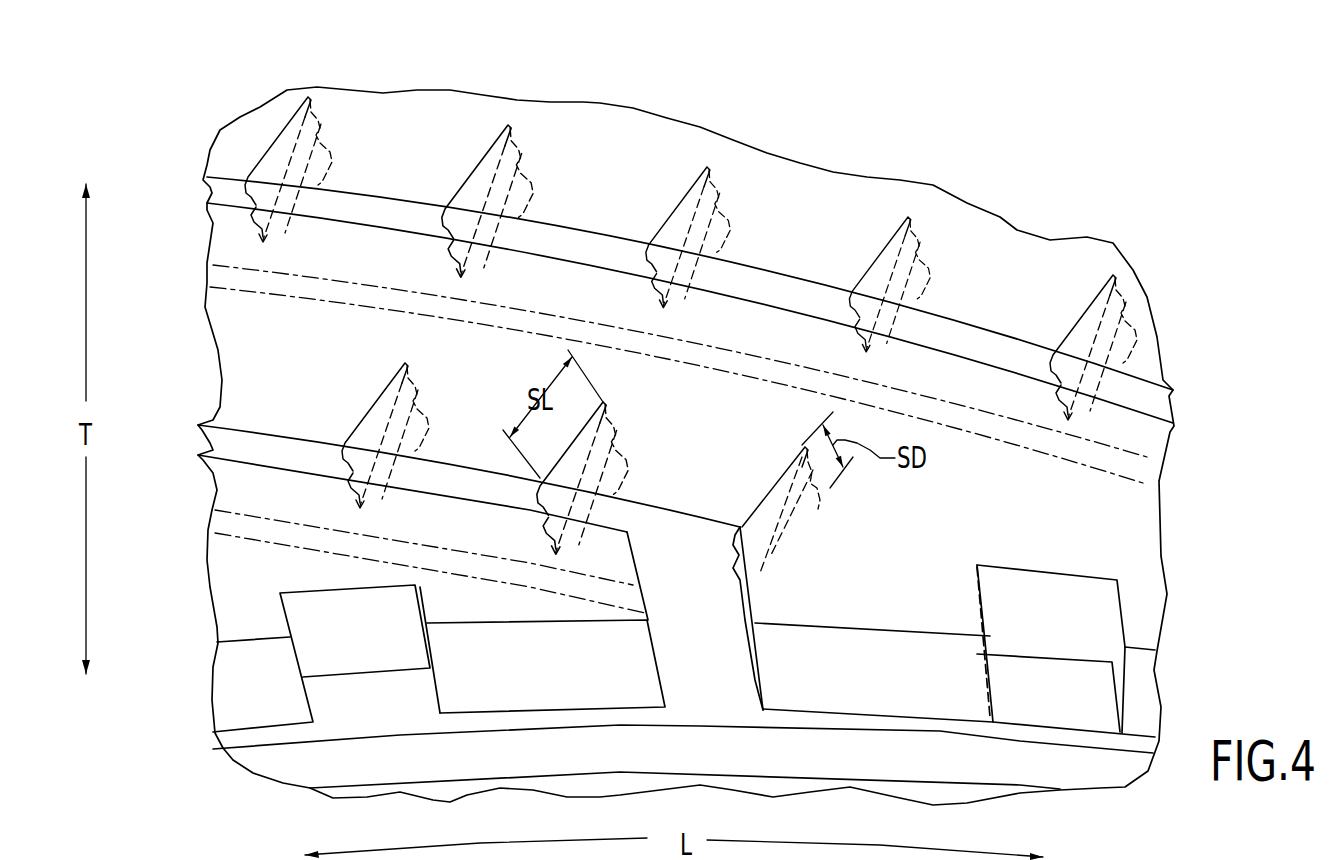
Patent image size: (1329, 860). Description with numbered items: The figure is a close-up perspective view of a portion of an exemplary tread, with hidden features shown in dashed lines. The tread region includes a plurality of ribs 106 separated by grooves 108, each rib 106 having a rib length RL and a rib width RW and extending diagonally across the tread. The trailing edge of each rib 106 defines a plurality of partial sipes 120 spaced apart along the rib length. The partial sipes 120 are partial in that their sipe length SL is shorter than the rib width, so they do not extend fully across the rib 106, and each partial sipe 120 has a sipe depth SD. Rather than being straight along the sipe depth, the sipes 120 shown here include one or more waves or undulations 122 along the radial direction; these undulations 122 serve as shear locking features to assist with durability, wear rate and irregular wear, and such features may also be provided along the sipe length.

The rib 106 is at (1003, 267).
The groove 108 is at (367, 200).
The partial sipe 120 is at (685, 178).
The undulation 122 is at (535, 134).